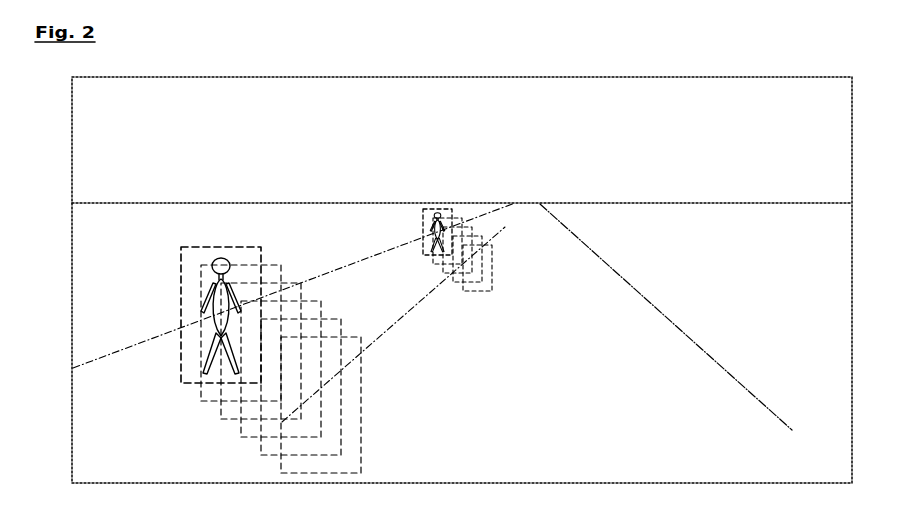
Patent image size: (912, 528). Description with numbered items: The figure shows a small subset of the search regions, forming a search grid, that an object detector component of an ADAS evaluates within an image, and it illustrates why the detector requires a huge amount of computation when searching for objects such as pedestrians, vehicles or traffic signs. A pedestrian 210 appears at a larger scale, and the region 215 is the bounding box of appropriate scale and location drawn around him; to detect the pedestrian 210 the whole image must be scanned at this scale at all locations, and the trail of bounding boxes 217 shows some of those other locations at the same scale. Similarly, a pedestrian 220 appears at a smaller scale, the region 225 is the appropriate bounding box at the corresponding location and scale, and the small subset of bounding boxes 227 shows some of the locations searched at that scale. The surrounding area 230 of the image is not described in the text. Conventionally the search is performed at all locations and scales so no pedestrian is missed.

The pedestrian 210 is at (212, 273).
The region 215 is at (179, 268).
The trail of bounding boxes 217 is at (329, 316).
The pedestrian 220 is at (421, 220).
The region 225 is at (420, 231).
The subset of bounding boxes 227 is at (495, 257).
The background region / road boundary 230 is at (660, 317).